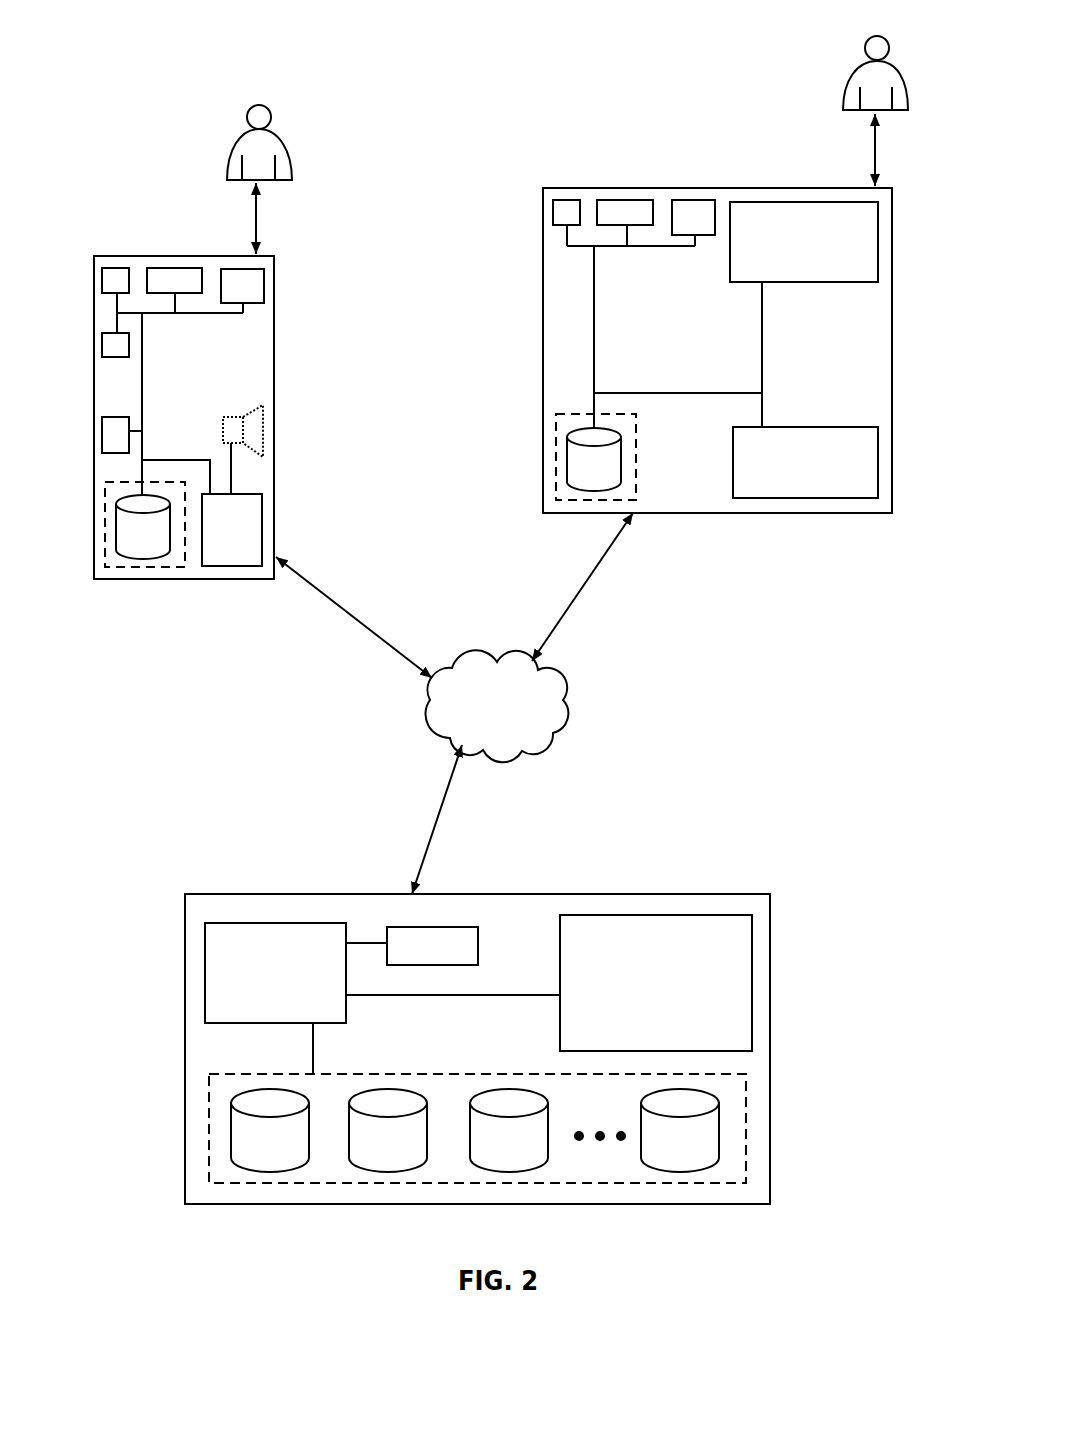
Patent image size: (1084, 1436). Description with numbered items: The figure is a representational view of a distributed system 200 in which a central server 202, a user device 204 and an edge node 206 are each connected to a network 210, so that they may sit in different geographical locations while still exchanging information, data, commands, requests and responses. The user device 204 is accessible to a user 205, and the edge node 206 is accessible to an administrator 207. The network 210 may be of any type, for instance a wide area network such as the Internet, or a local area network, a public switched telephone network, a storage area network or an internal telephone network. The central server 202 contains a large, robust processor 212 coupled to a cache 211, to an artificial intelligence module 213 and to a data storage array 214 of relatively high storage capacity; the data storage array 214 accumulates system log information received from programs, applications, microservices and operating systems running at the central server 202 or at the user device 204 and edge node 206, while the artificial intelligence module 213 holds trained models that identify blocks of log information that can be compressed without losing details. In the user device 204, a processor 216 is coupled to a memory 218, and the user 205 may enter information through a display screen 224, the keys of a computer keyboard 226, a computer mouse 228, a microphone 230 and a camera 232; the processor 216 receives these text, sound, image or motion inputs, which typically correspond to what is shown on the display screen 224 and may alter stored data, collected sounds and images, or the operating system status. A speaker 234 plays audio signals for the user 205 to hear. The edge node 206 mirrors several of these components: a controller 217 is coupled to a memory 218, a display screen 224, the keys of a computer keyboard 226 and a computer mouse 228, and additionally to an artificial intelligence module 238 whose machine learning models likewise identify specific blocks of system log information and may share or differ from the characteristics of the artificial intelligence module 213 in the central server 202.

The system 200 is at (126, 45).
The central server 202 is at (207, 894).
The user device 204 is at (274, 301).
The user 205 is at (296, 125).
The edge node 206 is at (892, 263).
The administrator 207 is at (914, 57).
The network 210 is at (510, 719).
The cache 211 is at (446, 958).
The processor 212 is at (205, 973).
The artificial intelligence module 213 is at (675, 992).
The data storage array 214 is at (237, 1184).
The processor 216 is at (262, 513).
The controller 217 is at (878, 445).
The memory 218 is at (130, 567).
The display screen 224 is at (243, 267).
The computer keyboard 226 is at (182, 267).
The computer mouse 228 is at (120, 267).
The microphone 230 is at (112, 357).
The camera 232 is at (101, 444).
The speaker 234 is at (263, 436).
The artificial intelligence module 238 is at (821, 254).